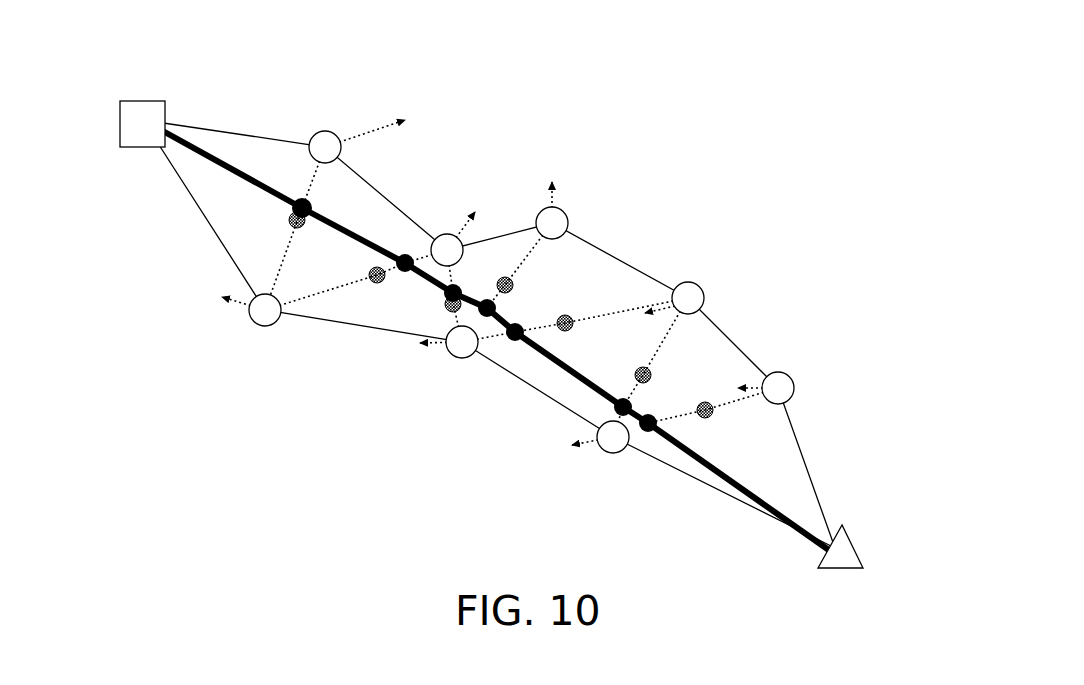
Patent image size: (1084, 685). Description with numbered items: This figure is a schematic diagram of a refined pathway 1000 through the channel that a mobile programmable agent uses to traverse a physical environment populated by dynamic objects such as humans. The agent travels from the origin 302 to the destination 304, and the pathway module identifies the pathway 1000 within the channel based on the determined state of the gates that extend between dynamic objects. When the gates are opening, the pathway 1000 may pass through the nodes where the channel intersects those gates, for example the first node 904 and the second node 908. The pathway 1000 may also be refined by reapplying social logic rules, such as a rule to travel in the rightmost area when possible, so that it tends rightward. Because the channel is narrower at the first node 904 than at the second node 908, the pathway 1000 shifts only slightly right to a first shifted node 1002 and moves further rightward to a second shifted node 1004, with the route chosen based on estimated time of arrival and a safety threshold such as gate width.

The origin 302 is at (142, 99).
The destination 304 is at (863, 552).
The pathway 1000 is at (237, 165).
The first node 904 is at (314, 210).
The second node 908 is at (405, 253).
The first shifted node 1002 is at (290, 220).
The second shifted node 1004 is at (380, 284).